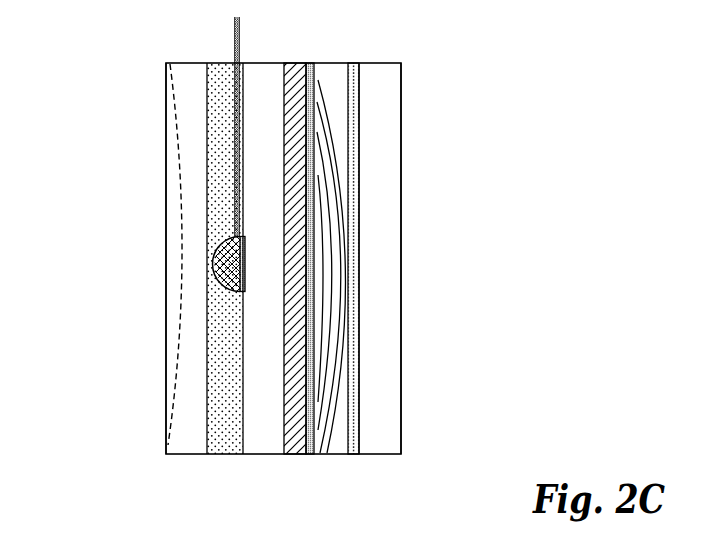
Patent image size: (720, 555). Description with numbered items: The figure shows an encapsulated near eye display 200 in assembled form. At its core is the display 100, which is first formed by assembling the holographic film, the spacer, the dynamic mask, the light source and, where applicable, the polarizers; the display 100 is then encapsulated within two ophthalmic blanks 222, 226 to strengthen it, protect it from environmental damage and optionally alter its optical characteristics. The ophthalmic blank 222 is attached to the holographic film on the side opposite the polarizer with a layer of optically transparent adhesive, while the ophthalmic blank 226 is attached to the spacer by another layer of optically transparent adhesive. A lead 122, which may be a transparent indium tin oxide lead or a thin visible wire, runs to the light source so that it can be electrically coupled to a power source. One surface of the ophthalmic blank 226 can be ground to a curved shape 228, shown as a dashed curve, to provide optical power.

The encapsulated near eye display 200 is at (100, 82).
The display 100 is at (345, 58).
The lead 122 is at (234, 32).
The ophthalmic blank 222 is at (383, 440).
The ophthalmic blank 226 is at (179, 440).
The curved shape 228 is at (182, 225).